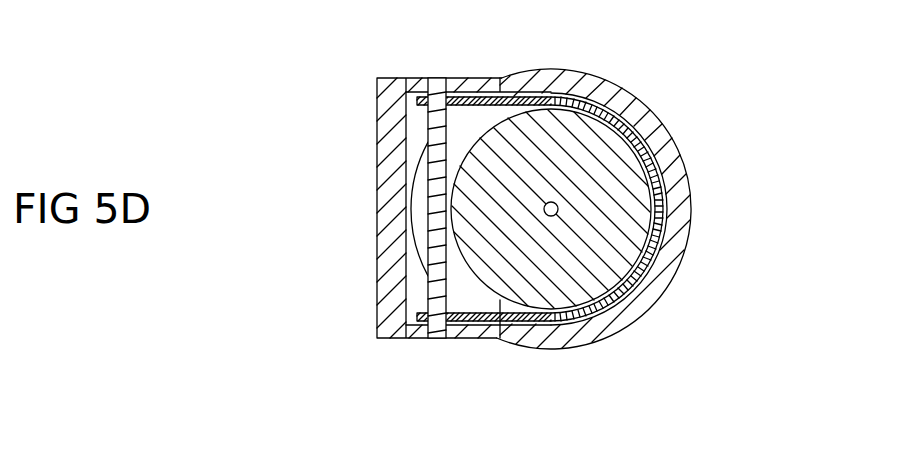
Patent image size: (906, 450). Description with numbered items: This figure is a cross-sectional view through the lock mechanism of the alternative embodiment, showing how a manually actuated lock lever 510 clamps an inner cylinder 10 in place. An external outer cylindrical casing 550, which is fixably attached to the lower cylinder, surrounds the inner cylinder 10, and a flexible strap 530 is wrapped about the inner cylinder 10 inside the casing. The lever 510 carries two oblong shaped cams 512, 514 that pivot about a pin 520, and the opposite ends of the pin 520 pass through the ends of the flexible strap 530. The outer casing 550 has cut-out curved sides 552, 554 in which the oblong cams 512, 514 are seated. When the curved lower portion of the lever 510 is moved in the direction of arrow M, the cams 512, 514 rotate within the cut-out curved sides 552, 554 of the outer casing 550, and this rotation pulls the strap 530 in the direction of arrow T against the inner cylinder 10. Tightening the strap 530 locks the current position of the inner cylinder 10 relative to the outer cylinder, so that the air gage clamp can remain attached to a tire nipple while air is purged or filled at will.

The inner cylinder 10 is at (667, 203).
The lock lever 510 is at (378, 143).
The oblong shaped cam 512 is at (455, 80).
The oblong shaped cam 514 is at (470, 332).
The pin 520 is at (430, 240).
The flexible strap 530 is at (640, 104).
The outer cylindrical casing 550 is at (677, 142).
The cut-out curved side 552 is at (498, 82).
The cut-out curved side 554 is at (500, 327).